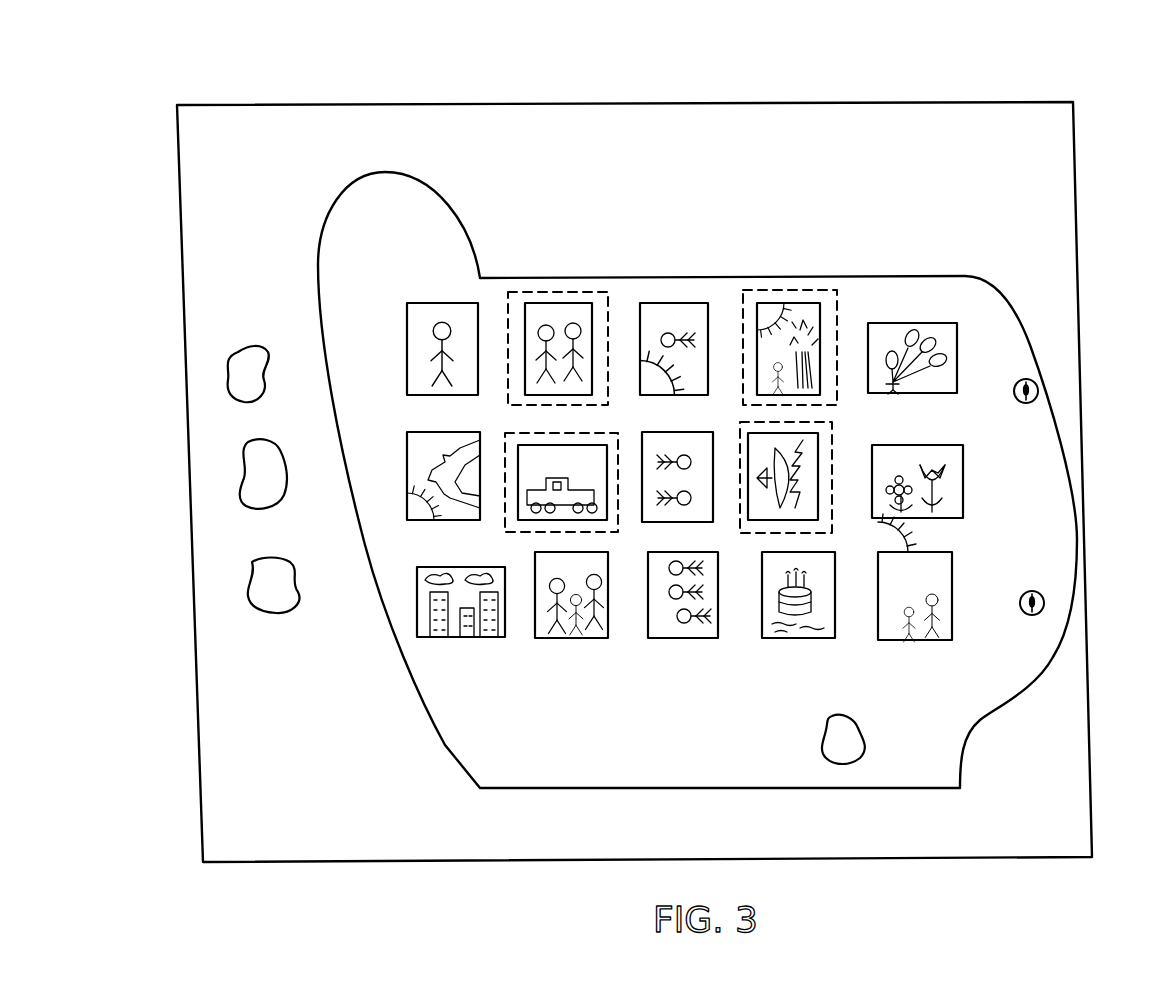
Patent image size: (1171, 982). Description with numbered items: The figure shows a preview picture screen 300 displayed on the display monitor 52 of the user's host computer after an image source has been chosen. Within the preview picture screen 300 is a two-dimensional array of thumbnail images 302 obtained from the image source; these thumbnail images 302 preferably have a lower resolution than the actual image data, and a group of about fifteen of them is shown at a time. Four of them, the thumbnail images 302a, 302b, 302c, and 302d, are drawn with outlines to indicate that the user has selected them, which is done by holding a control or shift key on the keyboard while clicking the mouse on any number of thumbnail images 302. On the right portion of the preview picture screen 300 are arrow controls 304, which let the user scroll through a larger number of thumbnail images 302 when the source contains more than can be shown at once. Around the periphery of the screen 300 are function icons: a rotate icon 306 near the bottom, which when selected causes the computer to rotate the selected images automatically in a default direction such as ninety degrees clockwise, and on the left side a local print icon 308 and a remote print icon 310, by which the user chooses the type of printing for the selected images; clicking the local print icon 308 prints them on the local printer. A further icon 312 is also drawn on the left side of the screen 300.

The display monitor 52 is at (907, 103).
The preview picture screen 300 is at (947, 275).
The thumbnail images 302 is at (407, 322).
The selected thumbnail image 302a is at (556, 290).
The selected thumbnail image 302b is at (793, 290).
The selected thumbnail image 302c is at (590, 433).
The selected thumbnail image 302d is at (832, 446).
The arrow controls 304 is at (1038, 384).
The rotate icon 306 is at (865, 757).
The local print icon 308 is at (227, 383).
The remote print icon 310 is at (242, 468).
The drag icon 312 is at (246, 586).